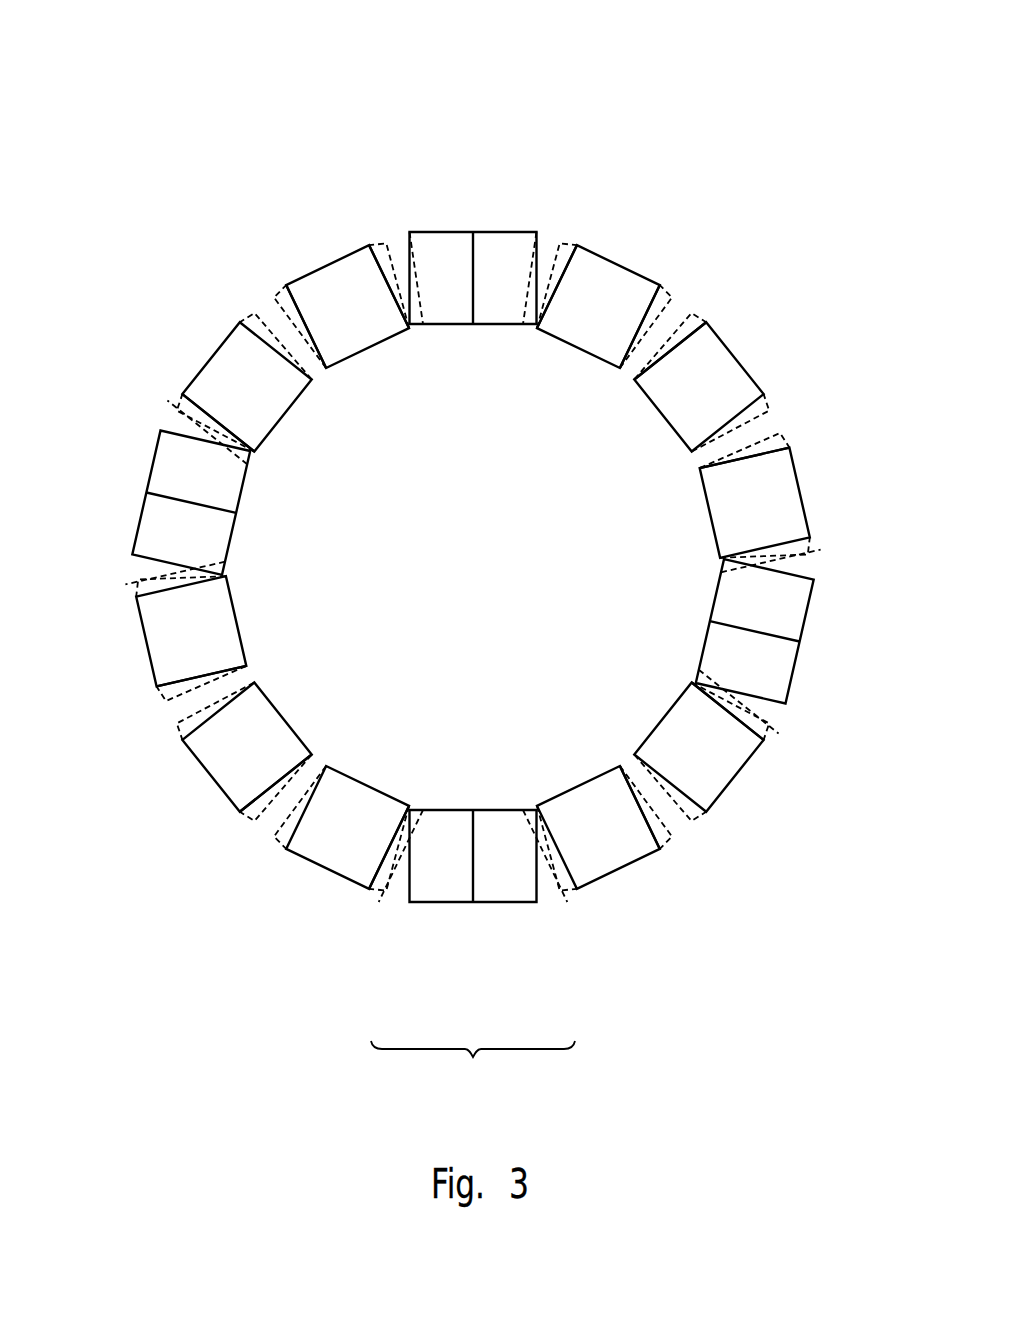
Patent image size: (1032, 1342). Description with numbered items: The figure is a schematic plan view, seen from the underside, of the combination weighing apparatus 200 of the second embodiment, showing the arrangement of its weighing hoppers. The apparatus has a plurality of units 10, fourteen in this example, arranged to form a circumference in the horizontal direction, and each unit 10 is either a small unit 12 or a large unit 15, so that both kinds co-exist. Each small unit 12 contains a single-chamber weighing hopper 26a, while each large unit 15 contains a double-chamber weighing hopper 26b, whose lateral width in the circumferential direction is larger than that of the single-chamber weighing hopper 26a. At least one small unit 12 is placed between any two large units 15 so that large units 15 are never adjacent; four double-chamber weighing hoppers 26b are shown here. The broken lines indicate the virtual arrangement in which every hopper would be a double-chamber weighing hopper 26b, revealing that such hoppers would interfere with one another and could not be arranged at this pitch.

The combination weighing apparatus 200 is at (781, 52).
The unit 10 is at (473, 1057).
The small unit 12 is at (320, 243).
The large unit 15 is at (469, 214).
The single-chamber weighing hopper 26a is at (370, 353).
The double-chamber weighing hopper 26b is at (451, 327).